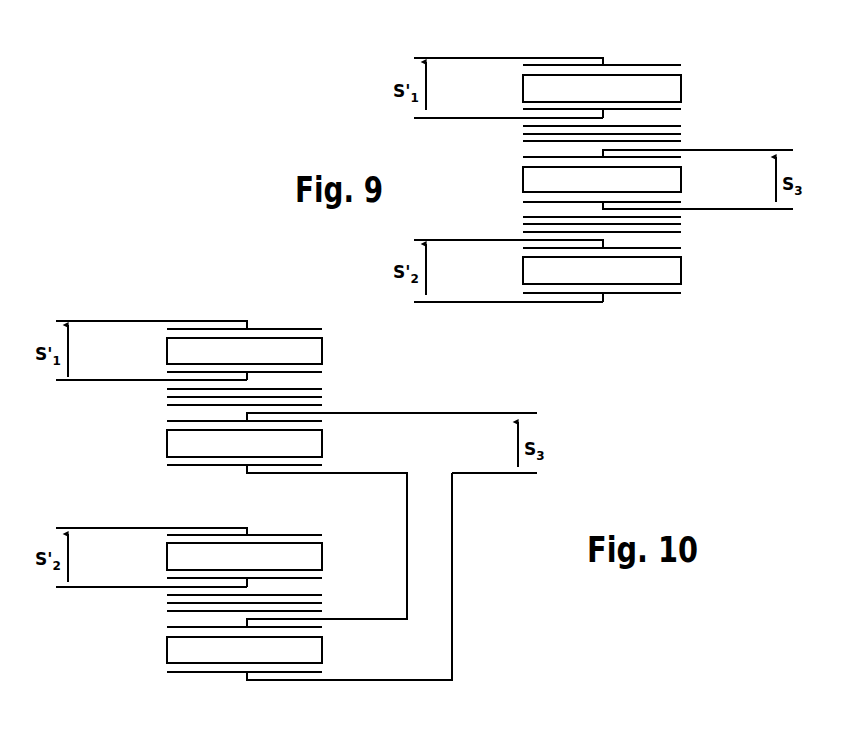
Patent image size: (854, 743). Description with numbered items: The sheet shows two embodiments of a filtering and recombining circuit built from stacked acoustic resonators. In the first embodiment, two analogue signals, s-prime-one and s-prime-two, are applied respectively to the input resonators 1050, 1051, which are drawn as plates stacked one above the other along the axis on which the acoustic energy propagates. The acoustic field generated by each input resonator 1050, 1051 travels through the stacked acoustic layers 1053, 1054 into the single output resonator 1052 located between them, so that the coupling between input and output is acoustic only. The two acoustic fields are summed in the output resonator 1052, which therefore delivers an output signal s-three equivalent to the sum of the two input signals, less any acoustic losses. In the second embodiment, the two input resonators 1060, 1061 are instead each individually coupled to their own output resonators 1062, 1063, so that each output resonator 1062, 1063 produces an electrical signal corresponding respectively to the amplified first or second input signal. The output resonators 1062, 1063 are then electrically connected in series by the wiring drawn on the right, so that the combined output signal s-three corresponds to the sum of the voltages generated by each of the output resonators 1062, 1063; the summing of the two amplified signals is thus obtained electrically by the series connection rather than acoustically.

In FIG. 9, the input resonator 1050 is at (640, 88).
In FIG. 9, the input resonator 1051 is at (668, 275).
In FIG. 9, the output resonator 1052 is at (668, 180).
In FIG. 9, the stacked acoustic layers 1053 is at (675, 130).
In FIG. 9, the stacked acoustic layers 1054 is at (675, 220).
In FIG. 10, the input resonator 1060 is at (273, 352).
In FIG. 10, the input resonator 1061 is at (203, 557).
In FIG. 10, the output resonator 1062 is at (285, 448).
In FIG. 10, the output resonator 1063 is at (275, 652).